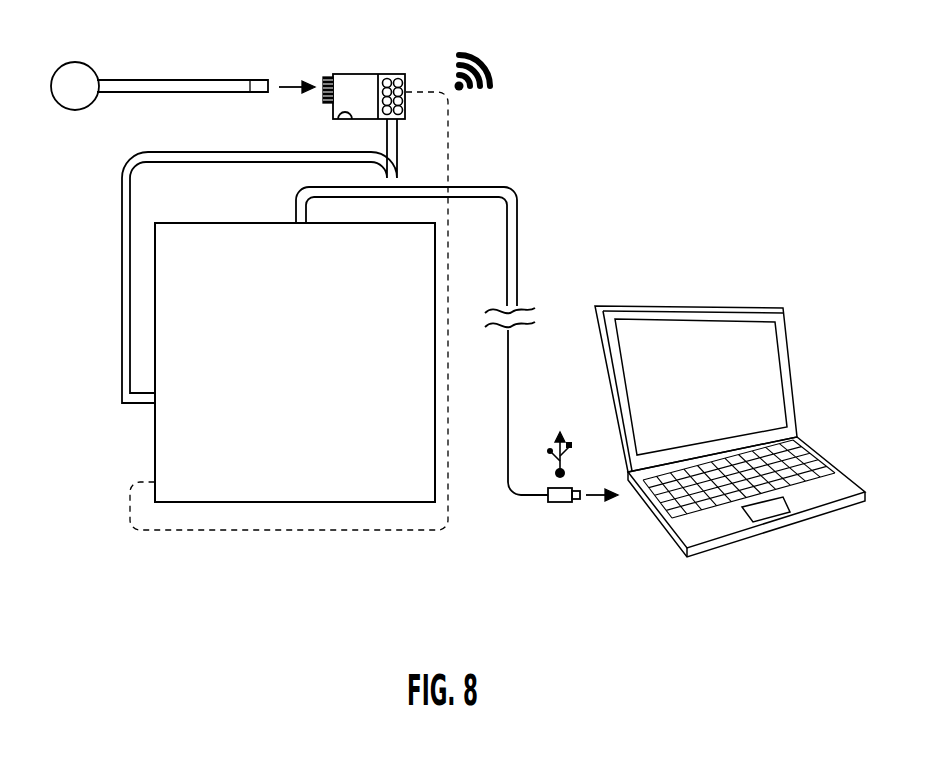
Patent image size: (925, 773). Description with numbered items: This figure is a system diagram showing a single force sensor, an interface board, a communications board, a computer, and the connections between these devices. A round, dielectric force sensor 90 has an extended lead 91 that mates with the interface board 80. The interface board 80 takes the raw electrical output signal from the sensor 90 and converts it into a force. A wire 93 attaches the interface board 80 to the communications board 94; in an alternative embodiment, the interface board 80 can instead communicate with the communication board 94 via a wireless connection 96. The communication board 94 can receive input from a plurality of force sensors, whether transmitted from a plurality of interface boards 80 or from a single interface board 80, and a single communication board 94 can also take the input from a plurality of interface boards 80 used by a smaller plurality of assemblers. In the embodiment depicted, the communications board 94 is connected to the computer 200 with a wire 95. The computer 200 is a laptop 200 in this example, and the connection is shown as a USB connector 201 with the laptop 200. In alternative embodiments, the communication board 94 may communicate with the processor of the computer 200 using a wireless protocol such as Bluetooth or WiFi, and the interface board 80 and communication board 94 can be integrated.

The interface board 80 is at (388, 74).
The dielectric force sensor 90 is at (76, 62).
The extended lead 91 is at (228, 80).
The wire 93 is at (122, 180).
The communications board 94 is at (395, 503).
The wire 95 is at (474, 187).
The wireless connection 96 is at (197, 531).
The computer 200 is at (767, 524).
The USB connector 201 is at (560, 503).